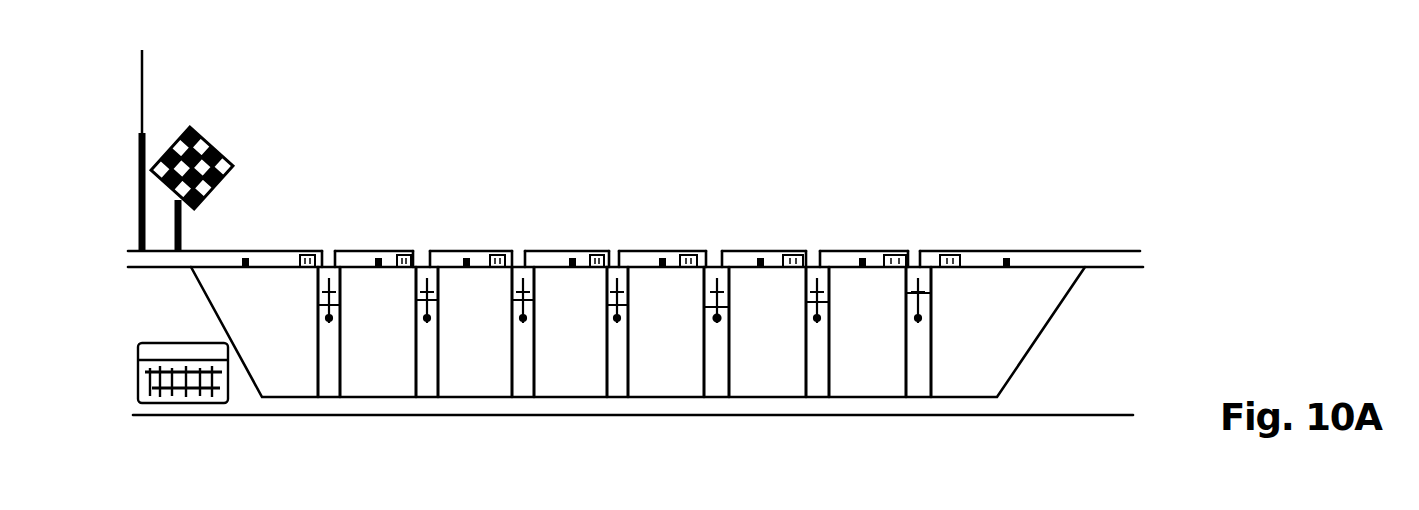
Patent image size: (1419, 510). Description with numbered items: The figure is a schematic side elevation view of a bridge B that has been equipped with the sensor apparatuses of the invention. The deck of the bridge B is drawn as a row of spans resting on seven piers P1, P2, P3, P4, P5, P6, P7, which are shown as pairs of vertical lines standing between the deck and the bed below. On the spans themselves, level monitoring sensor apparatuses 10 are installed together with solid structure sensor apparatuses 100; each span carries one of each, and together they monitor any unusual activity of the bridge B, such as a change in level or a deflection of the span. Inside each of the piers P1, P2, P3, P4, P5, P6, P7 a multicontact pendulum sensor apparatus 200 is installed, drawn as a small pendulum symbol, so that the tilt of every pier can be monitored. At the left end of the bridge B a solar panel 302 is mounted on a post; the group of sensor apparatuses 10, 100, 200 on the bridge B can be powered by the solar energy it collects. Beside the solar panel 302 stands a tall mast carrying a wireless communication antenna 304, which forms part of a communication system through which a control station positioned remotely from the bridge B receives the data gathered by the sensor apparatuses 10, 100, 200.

The wireless communication antenna 304 is at (142, 95).
The solar panel 302 is at (208, 146).
The bridge B is at (579, 172).
The solid structure sensor apparatus 100 is at (246, 256).
The level monitoring sensor apparatus 10 is at (306, 256).
The multicontact pendulum sensor apparatus 200 is at (320, 306).
The pier P1 is at (320, 367).
The pier P2 is at (433, 377).
The pier P3 is at (525, 380).
The pier P4 is at (620, 377).
The pier P5 is at (722, 375).
The pier P6 is at (813, 378).
The pier P7 is at (920, 378).